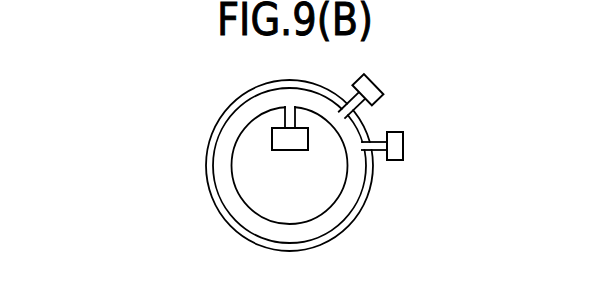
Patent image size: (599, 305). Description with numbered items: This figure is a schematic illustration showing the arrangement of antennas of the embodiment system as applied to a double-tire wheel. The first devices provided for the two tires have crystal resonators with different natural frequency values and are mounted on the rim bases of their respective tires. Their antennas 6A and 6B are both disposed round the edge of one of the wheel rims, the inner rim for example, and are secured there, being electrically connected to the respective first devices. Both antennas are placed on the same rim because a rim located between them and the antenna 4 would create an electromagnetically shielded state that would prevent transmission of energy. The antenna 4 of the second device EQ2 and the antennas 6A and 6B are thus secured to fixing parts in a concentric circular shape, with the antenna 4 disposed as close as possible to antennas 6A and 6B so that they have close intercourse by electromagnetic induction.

The antenna of the second device 4 is at (245, 125).
The antenna of the first device EQ1(A) 6A is at (212, 159).
The antenna of the first device EQ1(B) 6B is at (214, 141).
The second device EQ2 is at (291, 141).